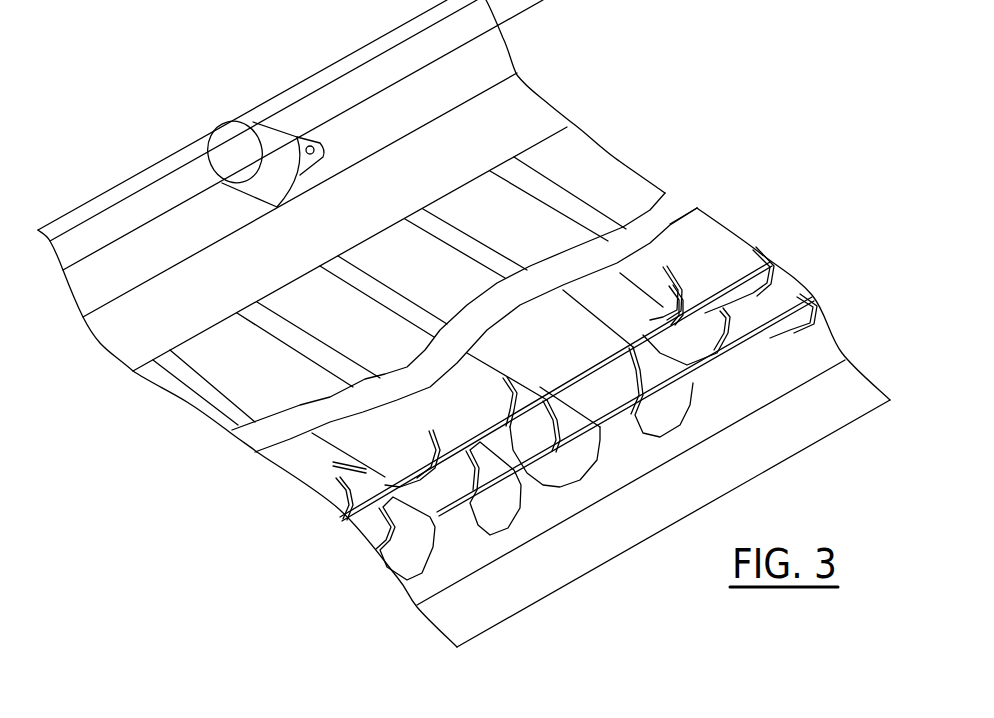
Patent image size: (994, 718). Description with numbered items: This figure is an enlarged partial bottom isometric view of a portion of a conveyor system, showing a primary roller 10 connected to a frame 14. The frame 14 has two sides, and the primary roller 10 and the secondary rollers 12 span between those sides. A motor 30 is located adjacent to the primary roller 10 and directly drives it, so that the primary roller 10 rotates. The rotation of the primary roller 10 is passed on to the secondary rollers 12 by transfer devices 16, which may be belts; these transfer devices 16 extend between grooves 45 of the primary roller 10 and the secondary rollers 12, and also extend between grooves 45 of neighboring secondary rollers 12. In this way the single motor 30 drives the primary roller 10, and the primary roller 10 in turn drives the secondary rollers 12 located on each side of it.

The primary roller 10 is at (613, 390).
The secondary roller 12 is at (738, 363).
The frame member 14 is at (378, 110).
The transfer device 16 is at (690, 380).
The motor 30 is at (237, 167).
The groove 45 is at (678, 323).